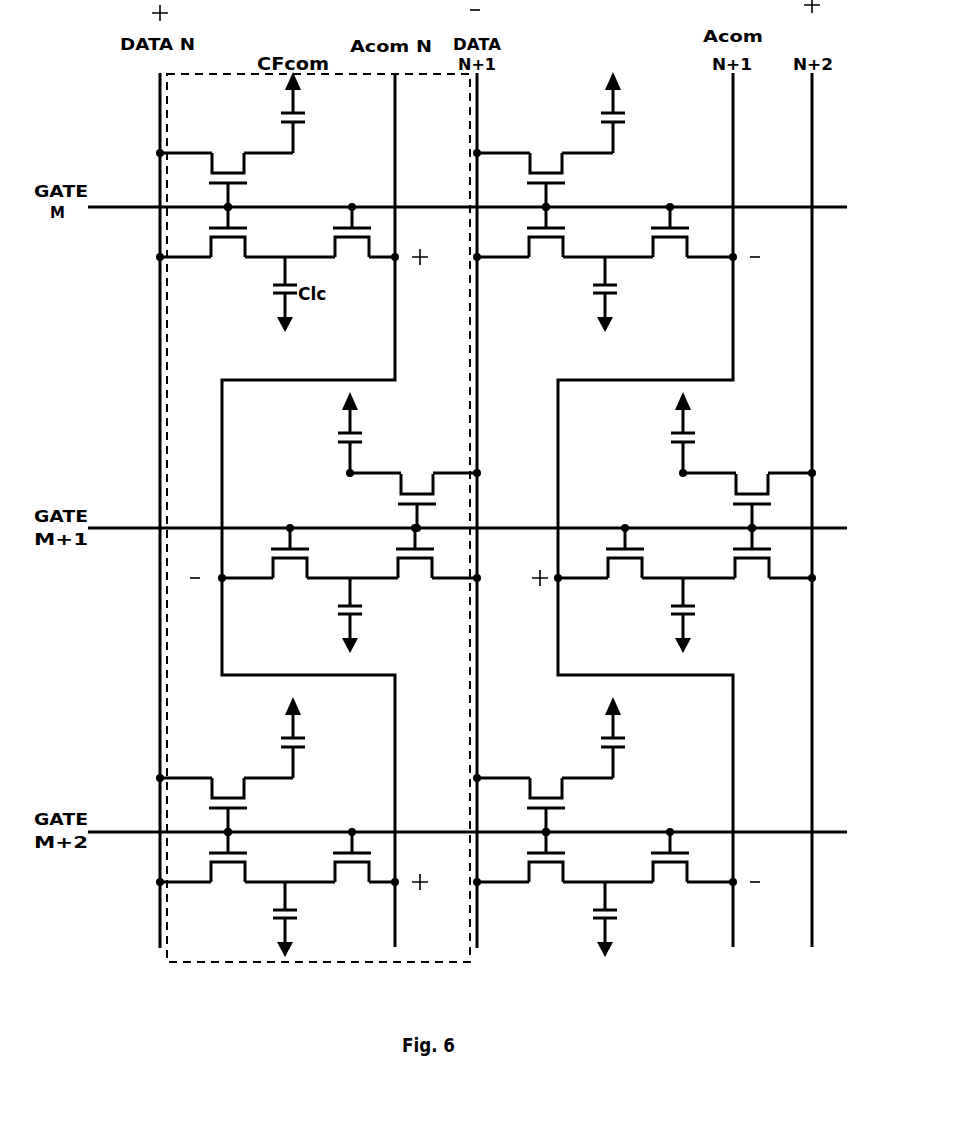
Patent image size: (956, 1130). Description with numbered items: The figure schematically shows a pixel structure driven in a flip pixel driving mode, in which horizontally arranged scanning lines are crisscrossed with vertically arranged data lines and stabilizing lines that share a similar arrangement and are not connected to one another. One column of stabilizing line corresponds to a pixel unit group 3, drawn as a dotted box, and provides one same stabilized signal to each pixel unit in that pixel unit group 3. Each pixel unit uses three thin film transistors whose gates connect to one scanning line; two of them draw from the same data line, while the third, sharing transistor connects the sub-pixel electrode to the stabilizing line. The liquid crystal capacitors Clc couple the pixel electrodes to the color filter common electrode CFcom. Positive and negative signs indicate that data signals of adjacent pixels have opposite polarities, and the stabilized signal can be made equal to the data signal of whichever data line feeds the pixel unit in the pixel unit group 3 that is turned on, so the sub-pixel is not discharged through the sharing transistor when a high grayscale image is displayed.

The pixel unit group 3 is at (212, 72).
The liquid crystal capacitor Clc is at (313, 112).
The color filter common electrode CFcom is at (279, 306).